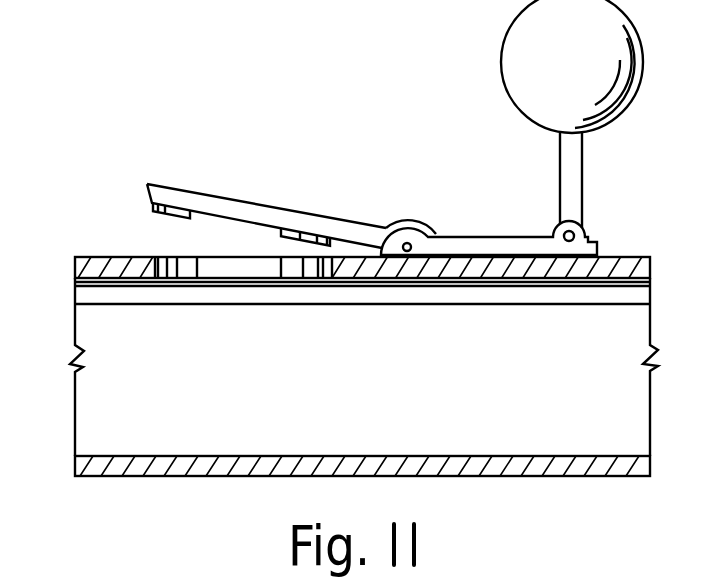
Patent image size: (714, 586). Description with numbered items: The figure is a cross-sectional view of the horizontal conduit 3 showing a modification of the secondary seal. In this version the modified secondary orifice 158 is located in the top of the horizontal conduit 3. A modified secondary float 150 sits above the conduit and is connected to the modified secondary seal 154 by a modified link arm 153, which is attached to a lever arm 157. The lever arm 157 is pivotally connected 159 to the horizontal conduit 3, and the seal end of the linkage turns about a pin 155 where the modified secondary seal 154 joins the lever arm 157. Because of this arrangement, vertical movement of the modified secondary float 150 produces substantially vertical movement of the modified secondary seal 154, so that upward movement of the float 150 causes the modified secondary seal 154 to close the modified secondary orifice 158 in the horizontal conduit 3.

The horizontal conduit 3 is at (118, 463).
The modified secondary float 150 is at (528, 72).
The modified link arm 153 is at (571, 173).
The modified secondary seal 154 is at (205, 215).
The pivot pin 155 is at (407, 243).
The lever arm 157 is at (460, 243).
The modified secondary orifice 158 is at (210, 267).
The pivotal connection 159 is at (575, 233).